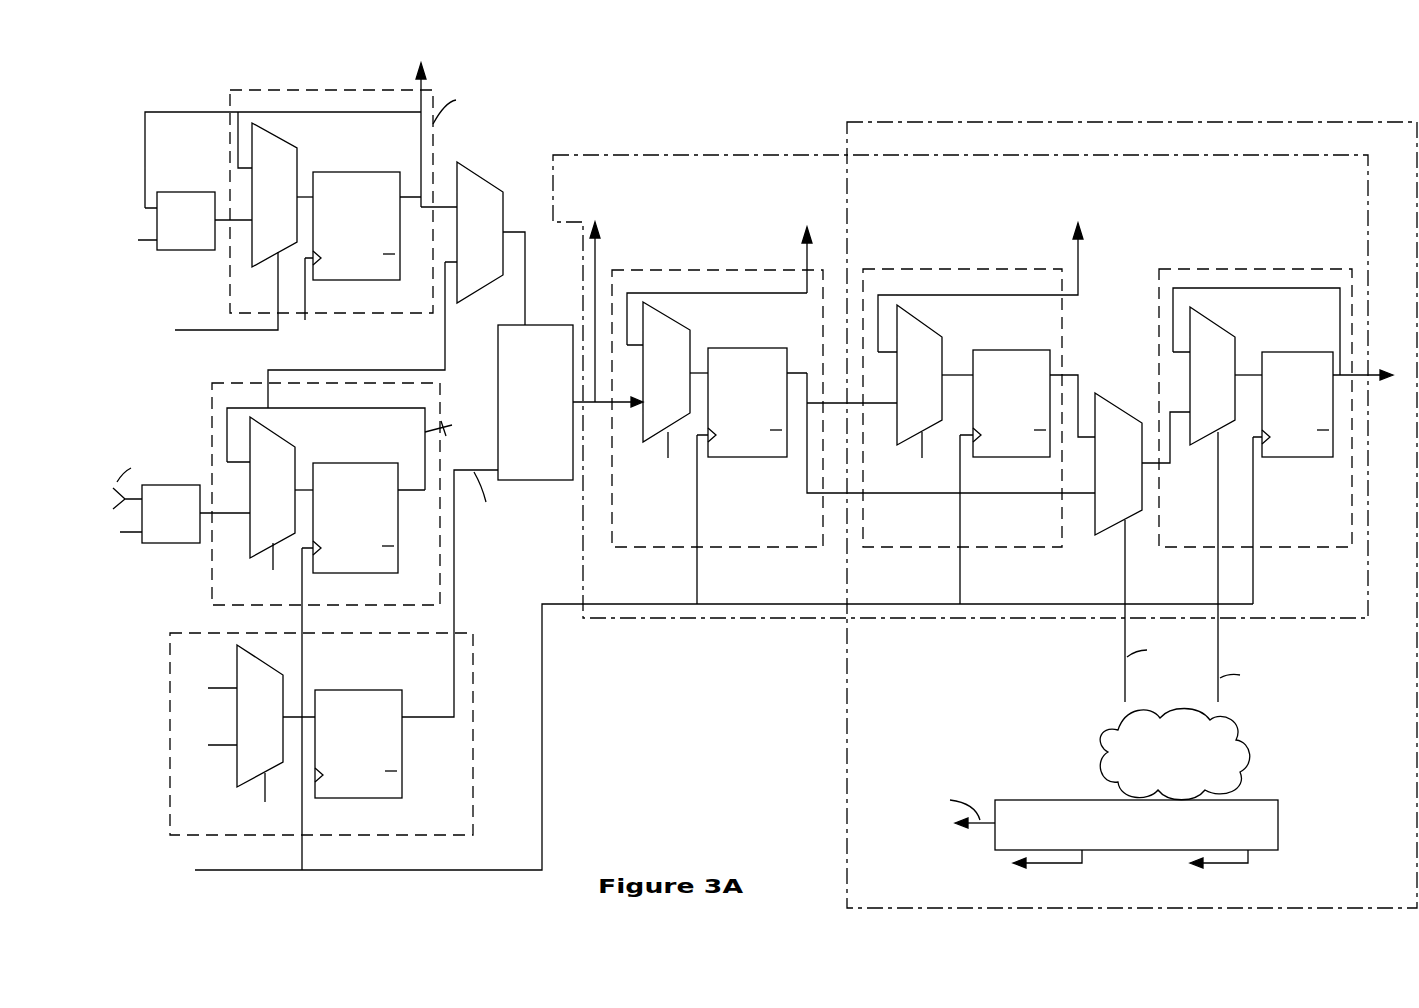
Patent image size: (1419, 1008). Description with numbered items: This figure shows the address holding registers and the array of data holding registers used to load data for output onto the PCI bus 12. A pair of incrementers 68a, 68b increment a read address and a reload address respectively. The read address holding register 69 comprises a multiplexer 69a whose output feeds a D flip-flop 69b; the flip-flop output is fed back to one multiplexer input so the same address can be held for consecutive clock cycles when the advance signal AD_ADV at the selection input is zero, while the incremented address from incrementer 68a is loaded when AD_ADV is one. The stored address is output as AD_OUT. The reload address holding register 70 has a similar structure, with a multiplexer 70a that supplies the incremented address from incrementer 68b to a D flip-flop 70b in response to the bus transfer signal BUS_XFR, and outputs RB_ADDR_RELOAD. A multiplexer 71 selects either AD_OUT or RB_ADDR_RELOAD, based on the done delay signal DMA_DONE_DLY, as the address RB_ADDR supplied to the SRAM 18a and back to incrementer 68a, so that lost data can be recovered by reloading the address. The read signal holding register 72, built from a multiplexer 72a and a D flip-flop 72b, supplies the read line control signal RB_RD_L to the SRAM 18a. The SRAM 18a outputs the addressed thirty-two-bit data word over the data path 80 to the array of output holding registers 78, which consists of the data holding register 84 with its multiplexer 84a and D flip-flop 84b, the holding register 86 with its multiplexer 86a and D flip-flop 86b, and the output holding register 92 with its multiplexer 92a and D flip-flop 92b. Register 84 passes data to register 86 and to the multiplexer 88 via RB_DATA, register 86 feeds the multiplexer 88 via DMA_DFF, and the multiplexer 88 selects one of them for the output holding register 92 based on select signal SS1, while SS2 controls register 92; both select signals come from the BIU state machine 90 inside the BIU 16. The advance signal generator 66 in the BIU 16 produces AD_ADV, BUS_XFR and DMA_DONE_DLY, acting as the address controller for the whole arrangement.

The PCI bus 12 is at (1371, 401).
The BIU 16 is at (1163, 122).
The SRAM 18a is at (551, 446).
The advance signal generator 66 is at (1022, 803).
The incrementer 68a is at (172, 545).
The incrementer 68b is at (191, 252).
The read address holding register 69 is at (243, 382).
The multiplexer 69a is at (271, 438).
The D flip-flop 69b is at (371, 463).
The reload address holding register 70 is at (292, 90).
The multiplexer 70a is at (272, 146).
The D flip-flop 70b is at (371, 172).
The multiplexer 71 is at (478, 176).
The read signal holding register 72 is at (372, 836).
The multiplexer 72a is at (240, 765).
The D flip-flop 72b is at (352, 690).
The array of output holding registers 78 is at (735, 155).
The data path 80 is at (598, 259).
The data holding register 84 is at (701, 270).
The multiplexer 84a is at (683, 338).
The D flip-flop 84b is at (745, 348).
The holding register 86 is at (945, 268).
The multiplexer 86a is at (917, 334).
The D flip-flop 86b is at (1012, 355).
The multiplexer 88 is at (1114, 402).
The BIU state machine 90 is at (1250, 745).
The output holding register 92 is at (1216, 268).
The multiplexer 92a is at (1210, 334).
The D flip-flop 92b is at (1302, 355).